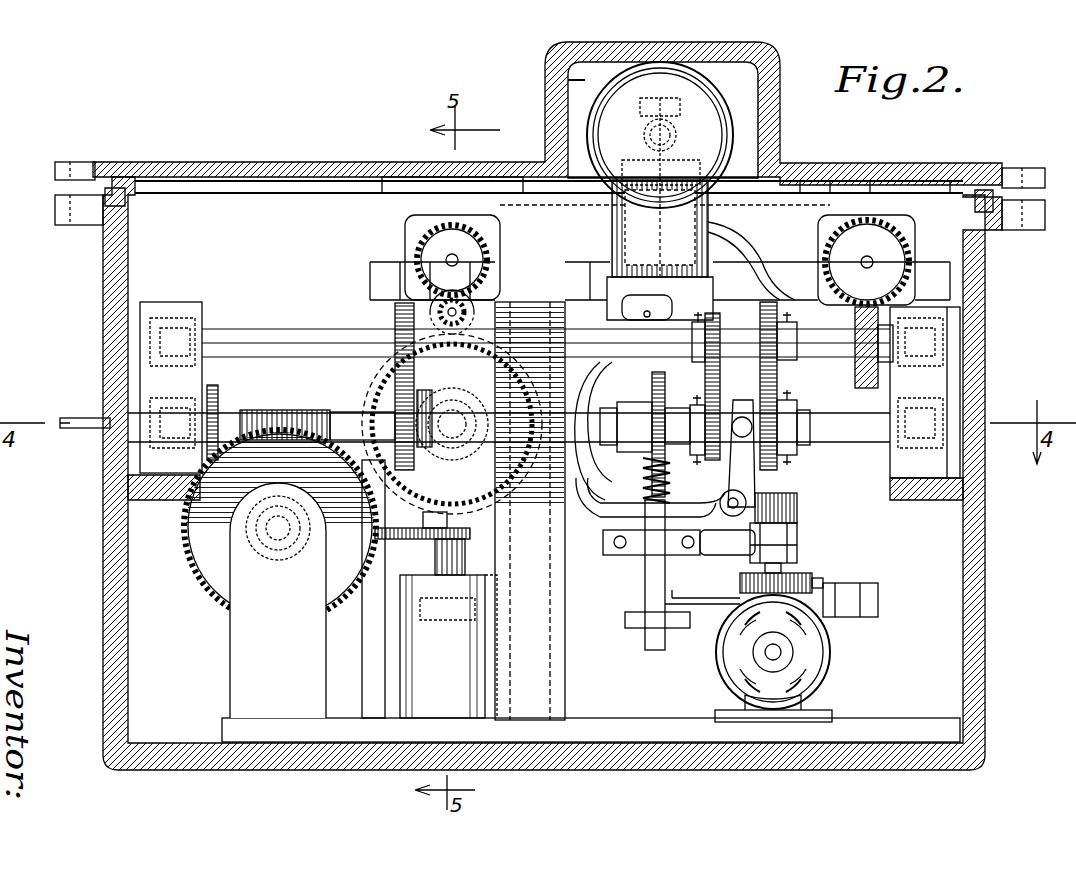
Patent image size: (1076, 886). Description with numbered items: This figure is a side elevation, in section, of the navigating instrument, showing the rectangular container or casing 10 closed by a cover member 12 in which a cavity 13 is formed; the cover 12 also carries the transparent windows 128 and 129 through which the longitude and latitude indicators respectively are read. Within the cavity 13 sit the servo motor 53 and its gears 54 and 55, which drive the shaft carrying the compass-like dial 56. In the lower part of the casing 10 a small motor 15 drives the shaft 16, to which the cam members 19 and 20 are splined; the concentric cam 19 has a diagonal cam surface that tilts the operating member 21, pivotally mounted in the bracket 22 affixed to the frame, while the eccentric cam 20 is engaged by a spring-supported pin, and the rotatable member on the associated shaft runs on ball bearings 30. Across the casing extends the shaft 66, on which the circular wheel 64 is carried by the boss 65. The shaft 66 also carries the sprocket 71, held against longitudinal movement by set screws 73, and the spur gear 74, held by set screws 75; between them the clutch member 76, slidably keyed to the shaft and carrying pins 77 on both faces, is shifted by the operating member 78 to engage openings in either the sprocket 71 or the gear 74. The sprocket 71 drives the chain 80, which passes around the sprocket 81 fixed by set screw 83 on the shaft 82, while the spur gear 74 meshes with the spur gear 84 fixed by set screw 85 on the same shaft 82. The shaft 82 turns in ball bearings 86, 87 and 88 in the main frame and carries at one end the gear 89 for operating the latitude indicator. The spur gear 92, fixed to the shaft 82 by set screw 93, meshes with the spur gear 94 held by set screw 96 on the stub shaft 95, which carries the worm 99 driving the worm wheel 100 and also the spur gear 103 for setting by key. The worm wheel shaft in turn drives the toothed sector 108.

The container or casing 10 is at (987, 425).
The cover member 12 is at (940, 178).
The cavity 13 is at (785, 88).
The motor 15 is at (830, 655).
The shaft 16 is at (790, 575).
The cam member 19 is at (805, 588).
The cam member 20 is at (797, 540).
The operating member 21 is at (705, 598).
The bracket 22 is at (858, 585).
The ball bearings 30 is at (690, 550).
The servo motor 53 is at (585, 95).
The gear 54 is at (672, 118).
The gear 55 is at (745, 82).
The dial 56 is at (805, 186).
The circular wheel 64 is at (662, 424).
The boss 65 is at (635, 392).
The shaft 66 is at (675, 426).
The sprocket 71 is at (671, 480).
The set screws 73 is at (695, 462).
The spur gear 74 is at (780, 468).
The set screws 75 is at (795, 460).
The clutch member 76 is at (730, 470).
The pins 77 is at (650, 497).
The operating member 78 is at (797, 497).
The chain 80 is at (705, 388).
The sprocket 81 is at (738, 290).
The shaft 82 is at (600, 330).
The set screw 83 is at (697, 312).
The spur gear 84 is at (765, 302).
The set screw 85 is at (797, 325).
The ball bearing 86 is at (185, 302).
The ball bearing 87 is at (538, 325).
The ball bearing 88 is at (975, 322).
The gear 89 is at (855, 375).
The spur gear 92 is at (395, 312).
The set screw 93 is at (400, 292).
The spur gear 94 is at (410, 392).
The stub shaft 95 is at (352, 414).
The set screw 96 is at (395, 362).
The worm 99 is at (273, 412).
The worm wheel 100 is at (195, 578).
The spur gear 103 is at (215, 400).
The toothed sector 108 is at (395, 540).
The transparent window 128 is at (455, 186).
The transparent window 129 is at (868, 190).